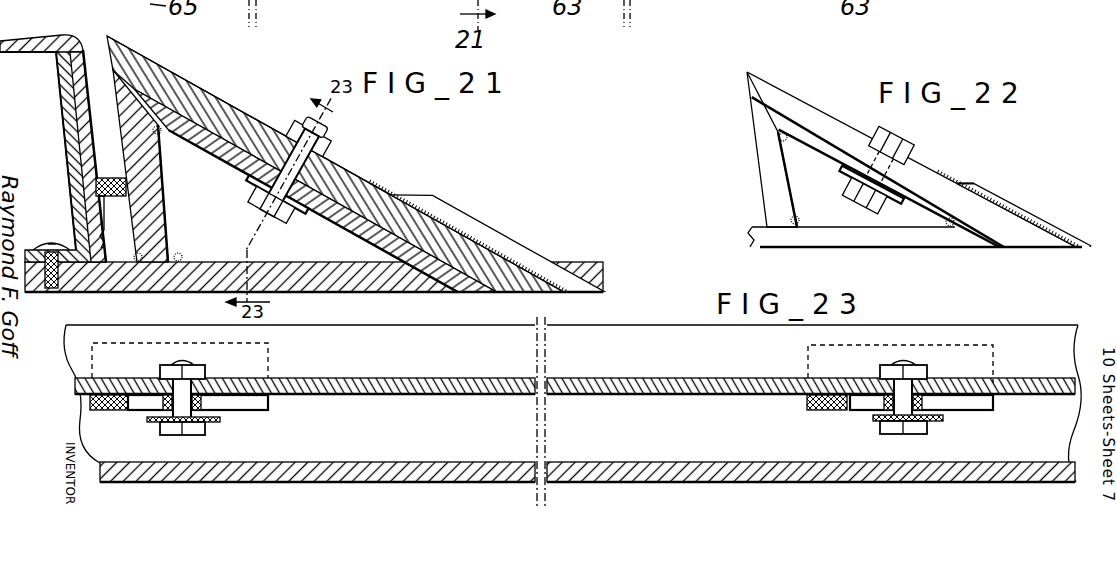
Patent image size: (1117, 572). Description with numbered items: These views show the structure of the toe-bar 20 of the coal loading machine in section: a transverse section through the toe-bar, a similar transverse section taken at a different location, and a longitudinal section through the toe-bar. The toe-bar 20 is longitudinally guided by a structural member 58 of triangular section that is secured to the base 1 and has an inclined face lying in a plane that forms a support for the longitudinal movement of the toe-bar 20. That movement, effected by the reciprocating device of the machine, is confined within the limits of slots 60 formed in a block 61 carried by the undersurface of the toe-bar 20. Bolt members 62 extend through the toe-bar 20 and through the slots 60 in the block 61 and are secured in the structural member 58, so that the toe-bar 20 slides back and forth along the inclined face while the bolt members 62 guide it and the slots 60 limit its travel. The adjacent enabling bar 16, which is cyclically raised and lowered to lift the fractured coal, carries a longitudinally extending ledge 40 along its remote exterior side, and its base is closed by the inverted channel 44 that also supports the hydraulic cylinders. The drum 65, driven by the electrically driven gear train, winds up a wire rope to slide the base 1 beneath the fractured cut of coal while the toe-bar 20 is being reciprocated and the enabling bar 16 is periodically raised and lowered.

In FIG. 21, the base 1 is at (333, 278).
In FIG. 22, the base 1 is at (907, 233).
In FIG. 23, the base 1 is at (345, 483).
In FIG. 21, the enabling bar 16 is at (34, 35).
In FIG. 21, the toe-bar 20 is at (390, 170).
In FIG. 22, the toe-bar 20 is at (943, 170).
In FIG. 23, the toe-bar 20 is at (623, 336).
In FIG. 21, the ledge 40 is at (123, 177).
In FIG. 21, the inverted channel 44 is at (65, 147).
In FIG. 21, the structural member 58 is at (208, 103).
In FIG. 22, the structural member 58 is at (808, 118).
In FIG. 23, the structural member 58 is at (410, 397).
In FIG. 21, the slots 60 is at (263, 124).
In FIG. 23, the slots 60 is at (253, 400).
In FIG. 23, the block 61 is at (107, 411).
In FIG. 21, the bolt members 62 is at (318, 140).
In FIG. 22, the bolt members 62 is at (897, 142).
In FIG. 23, the bolt members 62 is at (196, 374).
In FIG. 21, the drum 65 is at (518, 258).
In FIG. 22, the drum 65 is at (1007, 211).